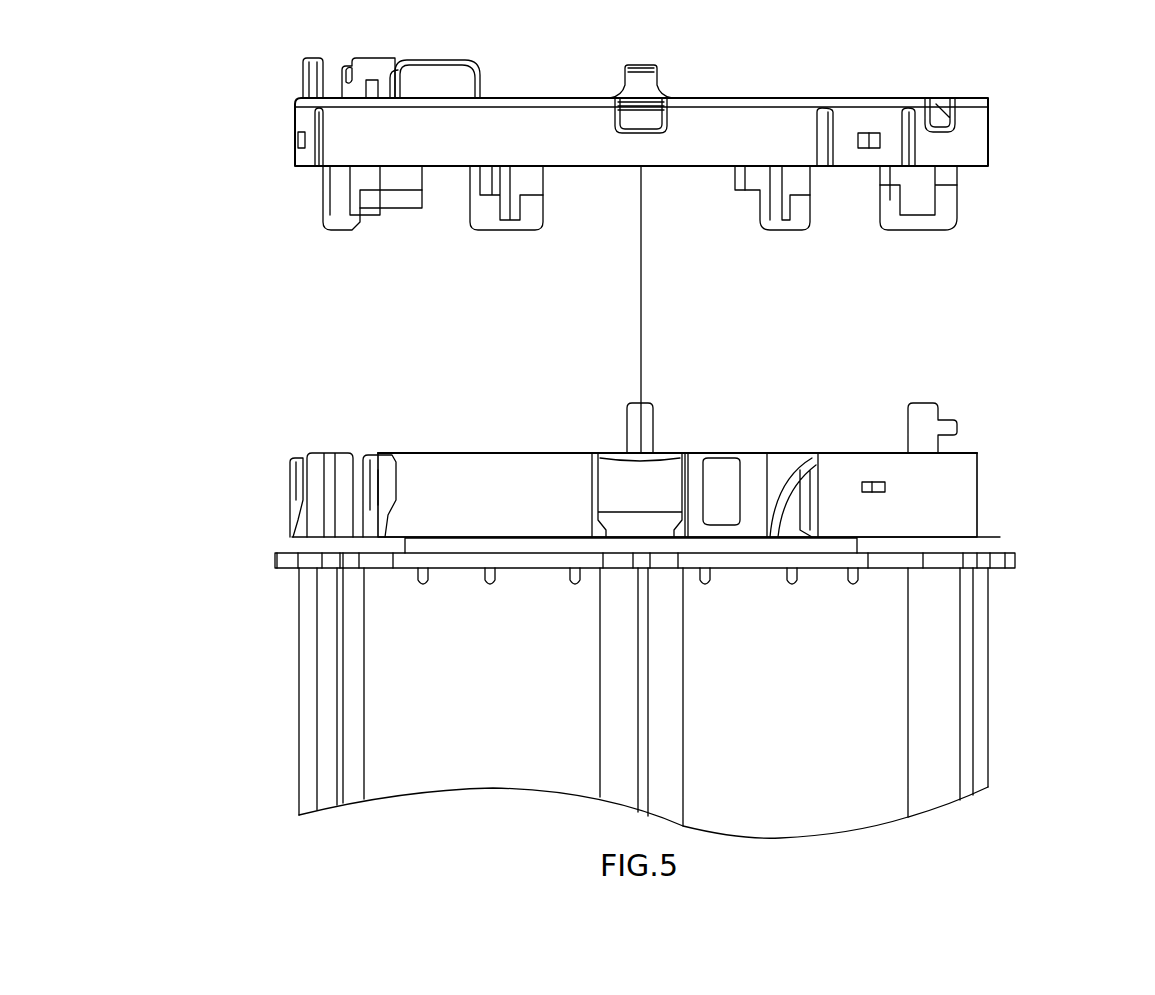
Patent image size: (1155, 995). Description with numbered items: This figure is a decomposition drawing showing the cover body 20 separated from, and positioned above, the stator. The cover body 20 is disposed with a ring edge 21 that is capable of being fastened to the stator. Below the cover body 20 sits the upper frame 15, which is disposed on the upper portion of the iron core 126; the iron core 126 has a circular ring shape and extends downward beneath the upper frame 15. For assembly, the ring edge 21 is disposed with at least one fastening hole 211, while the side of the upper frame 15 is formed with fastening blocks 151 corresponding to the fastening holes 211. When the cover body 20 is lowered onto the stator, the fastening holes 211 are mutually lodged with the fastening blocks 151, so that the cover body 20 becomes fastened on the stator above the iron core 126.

The cover body 20 is at (674, 159).
The ring edge 21 is at (595, 145).
The fastening hole 211 is at (298, 140).
The upper frame 15 is at (618, 489).
The fastening block 151 is at (297, 485).
The iron core 126 is at (942, 658).